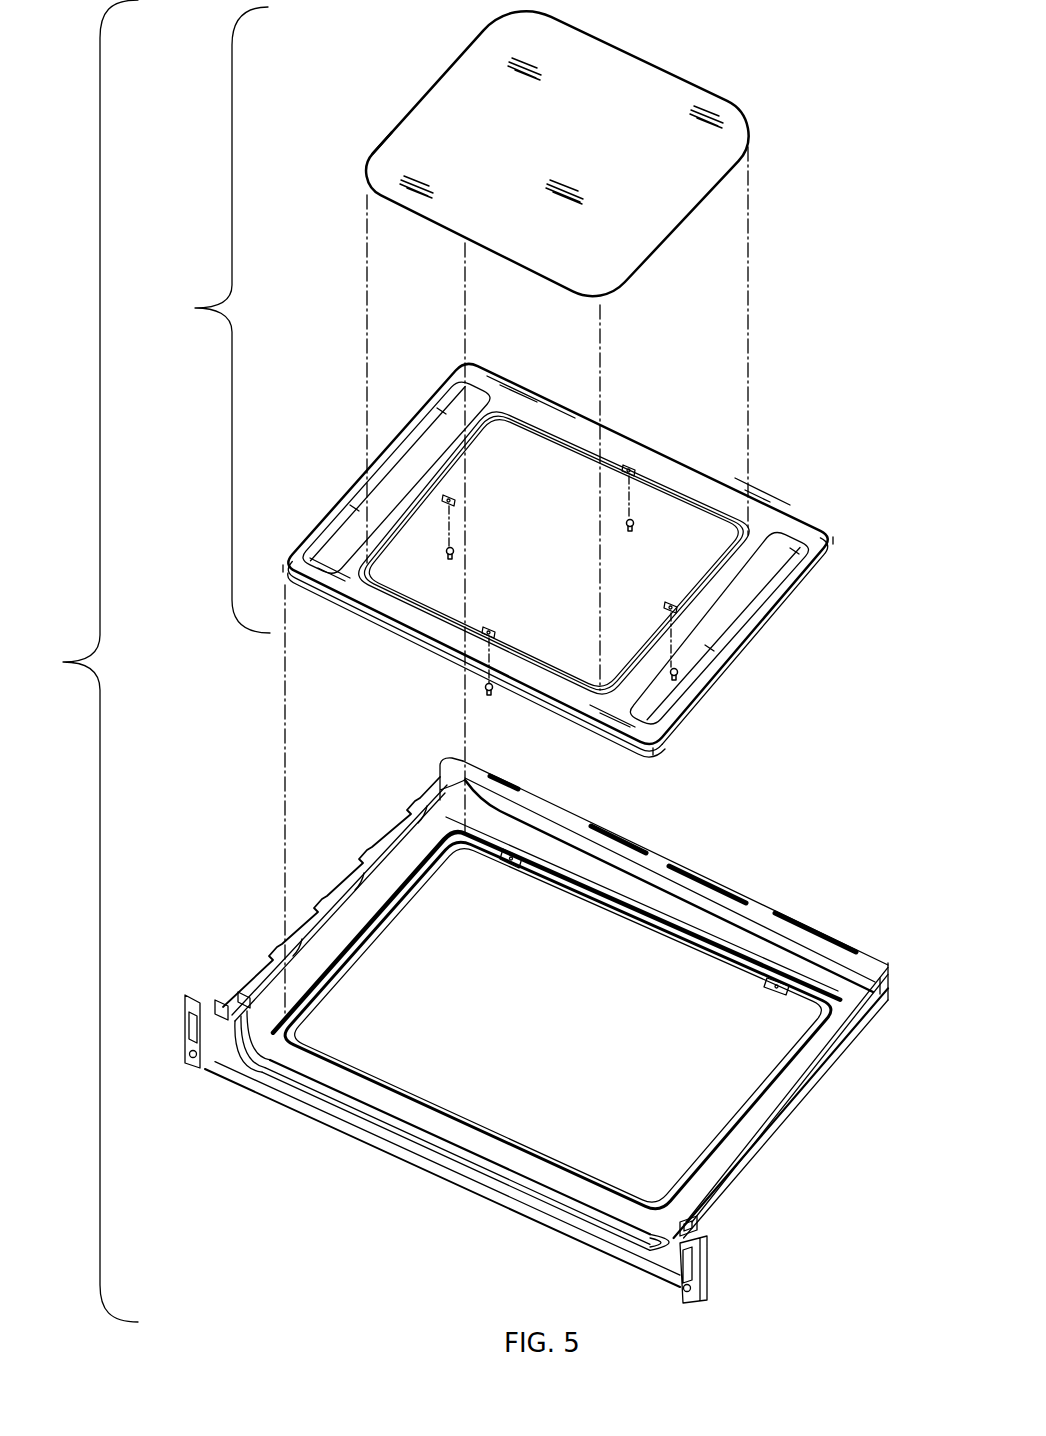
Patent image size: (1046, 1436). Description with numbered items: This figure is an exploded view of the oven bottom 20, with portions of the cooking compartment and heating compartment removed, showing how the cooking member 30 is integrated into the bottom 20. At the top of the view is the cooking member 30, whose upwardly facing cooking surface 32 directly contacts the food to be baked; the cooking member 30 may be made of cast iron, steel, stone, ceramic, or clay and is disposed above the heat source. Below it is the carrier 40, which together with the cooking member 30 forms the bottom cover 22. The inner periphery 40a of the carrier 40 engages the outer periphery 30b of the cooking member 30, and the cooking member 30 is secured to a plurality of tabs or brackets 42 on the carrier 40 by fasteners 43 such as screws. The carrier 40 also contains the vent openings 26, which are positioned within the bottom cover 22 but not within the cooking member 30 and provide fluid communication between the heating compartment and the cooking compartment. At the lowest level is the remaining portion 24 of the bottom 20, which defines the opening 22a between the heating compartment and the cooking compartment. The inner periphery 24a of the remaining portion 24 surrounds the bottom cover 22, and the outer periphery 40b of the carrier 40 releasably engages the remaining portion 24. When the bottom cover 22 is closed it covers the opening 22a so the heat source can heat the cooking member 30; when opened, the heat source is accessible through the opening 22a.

The bottom 20 is at (85, 661).
The bottom cover 22 is at (216, 320).
The opening 22a is at (700, 1010).
The remaining portion 24 is at (315, 1075).
The inner periphery 24a is at (368, 1078).
The vent openings 26 is at (450, 420).
The cooking member 30 is at (400, 88).
The outer periphery 30b is at (388, 135).
The cooking surface 32 is at (576, 148).
The carrier 40 is at (330, 445).
The inner periphery 40a is at (592, 688).
The outer periphery 40b is at (688, 710).
The tabs or brackets 42 is at (623, 471).
The fasteners 43 is at (634, 526).